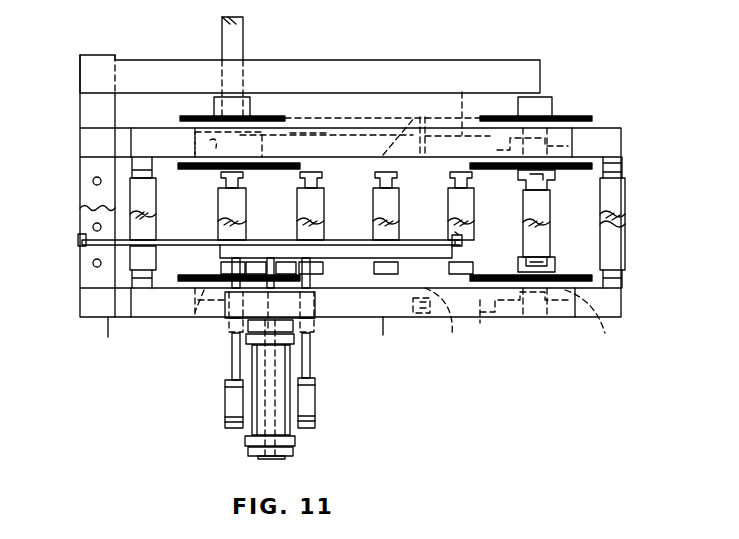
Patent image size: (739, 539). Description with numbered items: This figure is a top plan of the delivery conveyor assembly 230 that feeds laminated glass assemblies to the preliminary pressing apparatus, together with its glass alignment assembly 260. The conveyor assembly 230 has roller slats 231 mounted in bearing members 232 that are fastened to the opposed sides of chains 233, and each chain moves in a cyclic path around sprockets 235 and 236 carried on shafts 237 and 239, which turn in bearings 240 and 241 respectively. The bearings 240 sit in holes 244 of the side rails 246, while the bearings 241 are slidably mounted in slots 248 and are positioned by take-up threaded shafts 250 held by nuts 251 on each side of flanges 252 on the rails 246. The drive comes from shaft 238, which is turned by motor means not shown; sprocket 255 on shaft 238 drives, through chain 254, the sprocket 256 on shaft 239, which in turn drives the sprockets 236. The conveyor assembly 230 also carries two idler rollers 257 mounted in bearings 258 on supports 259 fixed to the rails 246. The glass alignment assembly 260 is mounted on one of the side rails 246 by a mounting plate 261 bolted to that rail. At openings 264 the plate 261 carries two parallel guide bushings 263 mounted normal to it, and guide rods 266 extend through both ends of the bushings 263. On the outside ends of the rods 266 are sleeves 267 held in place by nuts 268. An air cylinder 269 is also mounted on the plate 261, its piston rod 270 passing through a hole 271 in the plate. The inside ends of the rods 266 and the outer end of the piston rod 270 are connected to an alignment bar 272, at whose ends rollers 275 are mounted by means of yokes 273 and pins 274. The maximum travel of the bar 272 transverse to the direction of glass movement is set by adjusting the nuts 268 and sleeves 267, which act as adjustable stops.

The delivery conveyor assembly 230 is at (78, 196).
The roller slats 231 is at (297, 208).
The bearing members 232 is at (246, 180).
The chains 233 is at (344, 172).
The sprockets 235 is at (205, 170).
The sprockets 236 is at (578, 170).
The shaft 237 is at (333, 128).
The shaft 238 is at (236, 48).
The shaft 239 is at (552, 103).
The bearings 240 is at (270, 146).
The bearings 241 is at (560, 332).
The holes 244 is at (212, 148).
The side rails 246 is at (340, 126).
The slots 248 is at (596, 321).
The take-up threaded shafts 250 is at (374, 209).
The nuts 251 is at (424, 320).
The flanges 252 is at (449, 320).
The chain 254 is at (383, 118).
The sprocket 255 is at (262, 120).
The sprocket 256 is at (585, 118).
The idler rollers 257 is at (150, 212).
The bearings 258 is at (128, 166).
The supports 259 is at (130, 143).
The glass alignment assembly 260 is at (200, 233).
The mounting plate 261 is at (318, 303).
The guide bushings 263 is at (240, 326).
The openings 264 is at (320, 268).
The guide rods 266 is at (232, 366).
The sleeves 267 is at (225, 406).
The nuts 268 is at (228, 386).
The air cylinder 269 is at (256, 440).
The piston rod 270 is at (238, 250).
The hole 271 is at (270, 312).
The alignment bar 272 is at (274, 245).
The yokes 273 is at (82, 248).
The pins 274 is at (78, 215).
The rollers 275 is at (76, 237).